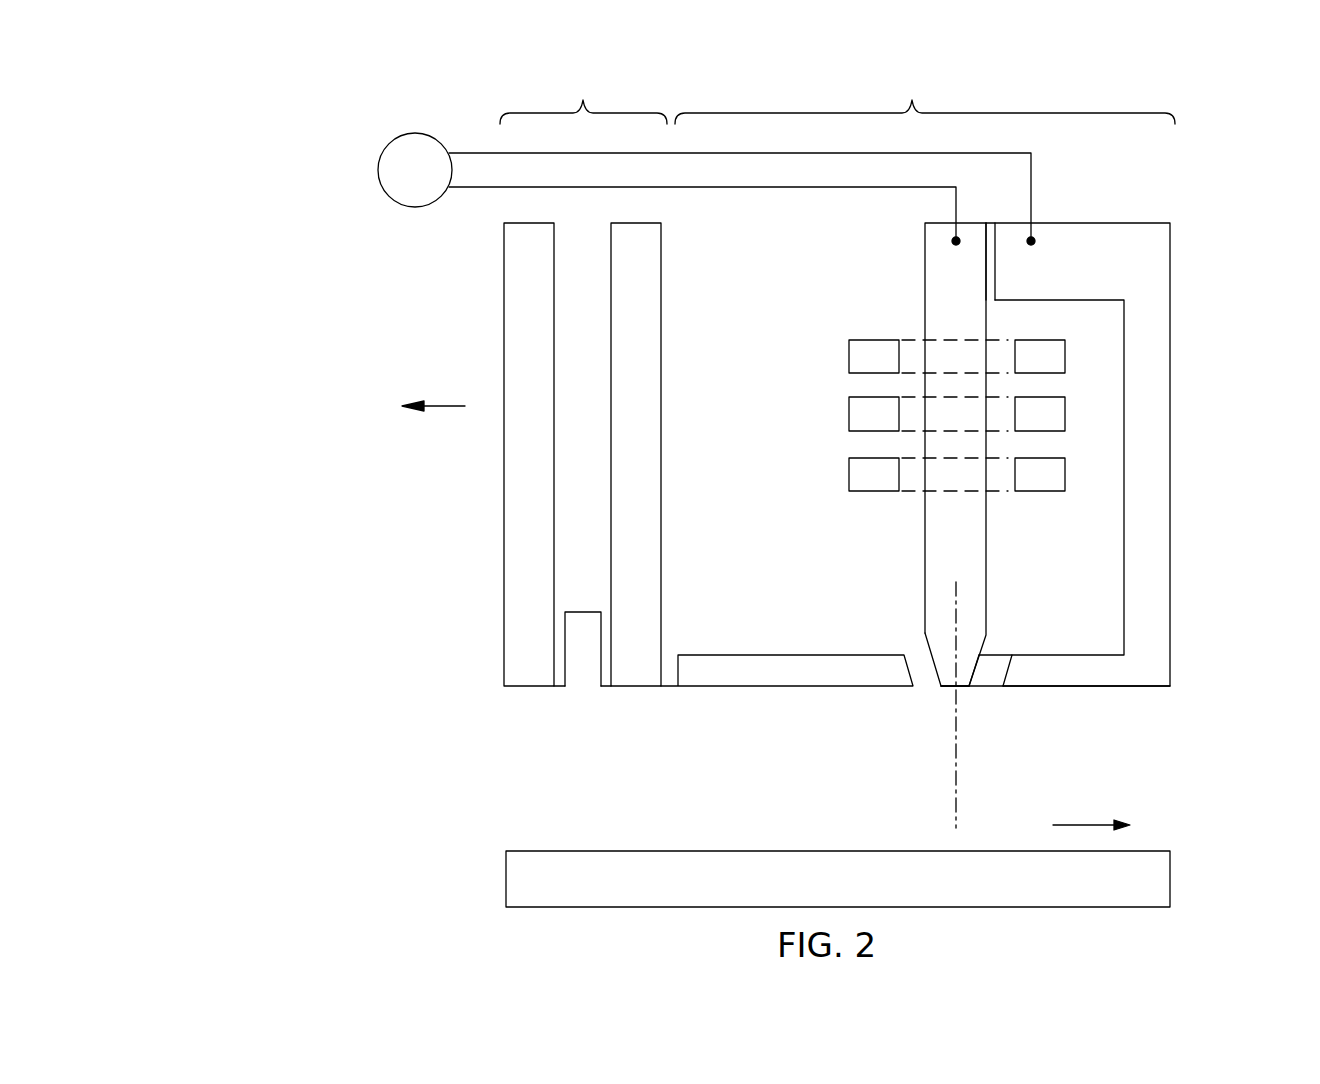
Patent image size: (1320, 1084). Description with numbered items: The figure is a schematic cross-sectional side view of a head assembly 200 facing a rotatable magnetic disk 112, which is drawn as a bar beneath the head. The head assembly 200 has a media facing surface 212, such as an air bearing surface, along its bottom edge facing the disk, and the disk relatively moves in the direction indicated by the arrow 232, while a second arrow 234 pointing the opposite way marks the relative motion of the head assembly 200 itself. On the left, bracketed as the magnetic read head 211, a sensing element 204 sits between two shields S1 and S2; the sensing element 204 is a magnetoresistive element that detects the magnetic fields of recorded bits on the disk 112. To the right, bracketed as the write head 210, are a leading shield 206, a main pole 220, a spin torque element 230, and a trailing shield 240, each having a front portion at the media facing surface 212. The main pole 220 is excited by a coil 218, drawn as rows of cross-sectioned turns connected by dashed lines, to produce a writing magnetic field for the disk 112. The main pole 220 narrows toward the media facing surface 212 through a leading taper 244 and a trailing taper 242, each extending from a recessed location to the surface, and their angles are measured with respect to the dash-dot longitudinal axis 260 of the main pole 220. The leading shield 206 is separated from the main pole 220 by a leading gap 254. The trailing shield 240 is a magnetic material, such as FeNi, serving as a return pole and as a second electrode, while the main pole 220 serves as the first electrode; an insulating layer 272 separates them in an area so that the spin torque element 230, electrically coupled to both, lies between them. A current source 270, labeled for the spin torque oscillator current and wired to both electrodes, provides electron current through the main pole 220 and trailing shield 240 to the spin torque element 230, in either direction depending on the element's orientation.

The head assembly 200 is at (247, 110).
The write head 210 is at (925, 93).
The magnetic read head 211 is at (583, 93).
The current source 270 is at (378, 160).
The insulating layer 272 is at (990, 227).
The shield S1 is at (521, 690).
The shield S2 is at (634, 690).
The sensing element 204 is at (576, 690).
The leading shield 206 is at (722, 690).
The coil 218 is at (871, 493).
The main pole 220 is at (972, 545).
The trailing shield 240 is at (1146, 672).
The leading taper 244 is at (927, 647).
The trailing taper 242 is at (983, 641).
The spin torque element 230 is at (992, 675).
The media facing surface 212 is at (1085, 688).
The leading gap 254 is at (926, 678).
The longitudinal axis 260 is at (955, 797).
The arrow 232 is at (1083, 823).
The up-track direction 234 is at (450, 405).
The rotatable magnetic disk 112 is at (1172, 870).